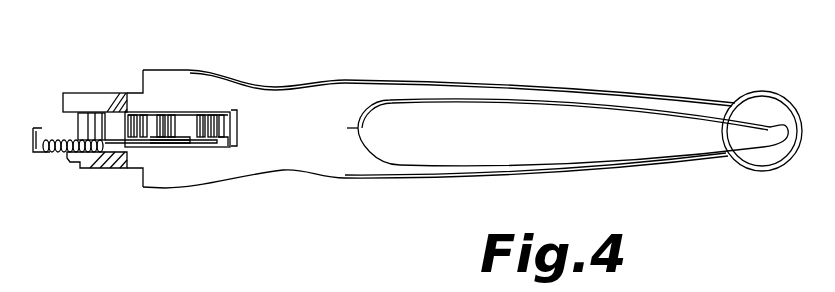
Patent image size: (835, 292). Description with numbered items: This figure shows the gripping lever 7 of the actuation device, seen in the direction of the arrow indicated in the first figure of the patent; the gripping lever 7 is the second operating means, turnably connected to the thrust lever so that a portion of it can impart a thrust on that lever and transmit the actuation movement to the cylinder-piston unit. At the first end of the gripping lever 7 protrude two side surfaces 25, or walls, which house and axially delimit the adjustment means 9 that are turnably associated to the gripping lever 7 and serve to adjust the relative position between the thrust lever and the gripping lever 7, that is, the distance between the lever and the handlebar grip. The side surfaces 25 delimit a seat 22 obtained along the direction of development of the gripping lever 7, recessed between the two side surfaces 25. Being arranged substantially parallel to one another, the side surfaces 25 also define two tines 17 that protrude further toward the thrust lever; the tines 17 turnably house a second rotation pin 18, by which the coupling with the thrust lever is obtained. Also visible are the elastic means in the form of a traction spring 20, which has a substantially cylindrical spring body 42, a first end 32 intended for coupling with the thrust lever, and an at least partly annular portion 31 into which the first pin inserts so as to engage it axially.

The gripping lever 7 is at (645, 173).
The adjustment means 9 is at (222, 141).
The tines 17 is at (97, 93).
The second rotation pin 18 is at (78, 125).
The traction spring 20 is at (143, 143).
The seat 22 is at (236, 125).
The side surfaces 25 is at (188, 118).
The at least partly annular portion 31 is at (182, 144).
The first end 32 is at (30, 153).
The spring body 42 is at (108, 112).